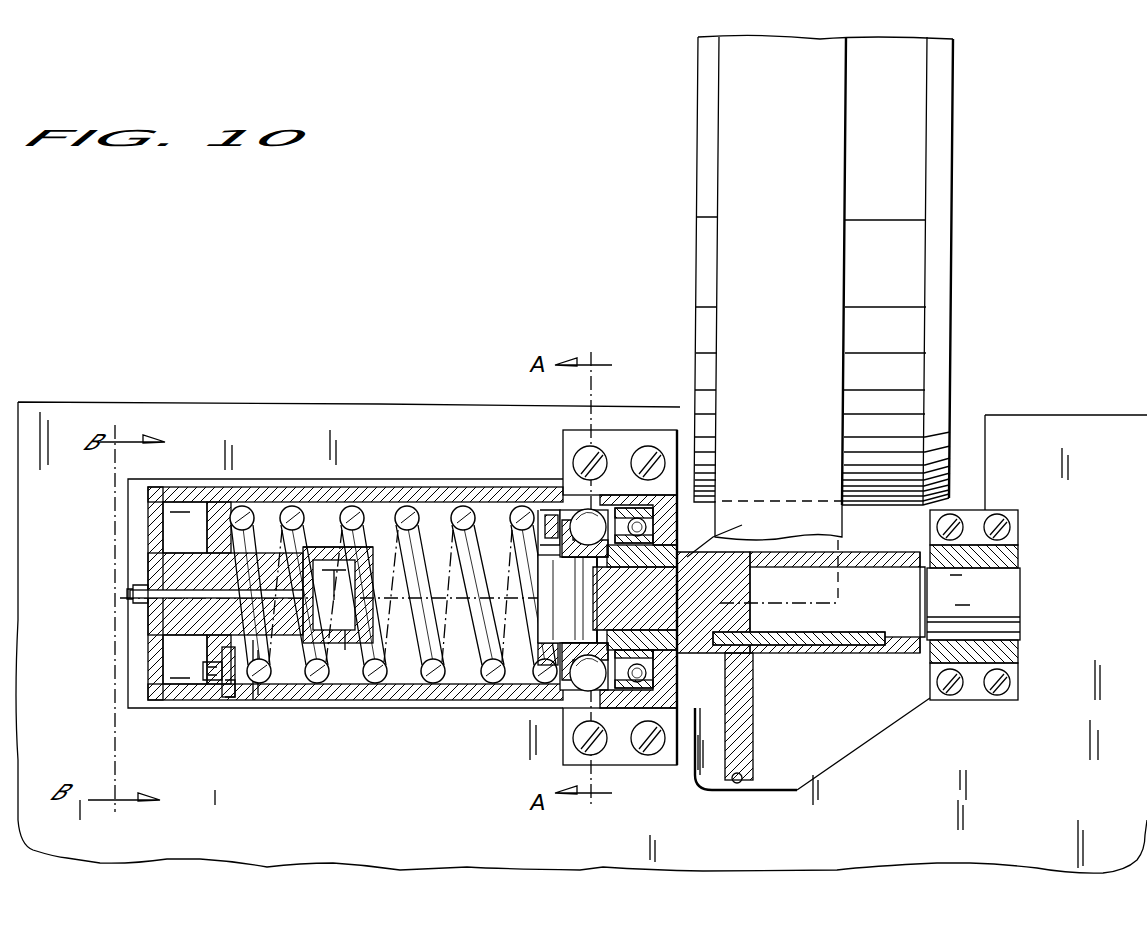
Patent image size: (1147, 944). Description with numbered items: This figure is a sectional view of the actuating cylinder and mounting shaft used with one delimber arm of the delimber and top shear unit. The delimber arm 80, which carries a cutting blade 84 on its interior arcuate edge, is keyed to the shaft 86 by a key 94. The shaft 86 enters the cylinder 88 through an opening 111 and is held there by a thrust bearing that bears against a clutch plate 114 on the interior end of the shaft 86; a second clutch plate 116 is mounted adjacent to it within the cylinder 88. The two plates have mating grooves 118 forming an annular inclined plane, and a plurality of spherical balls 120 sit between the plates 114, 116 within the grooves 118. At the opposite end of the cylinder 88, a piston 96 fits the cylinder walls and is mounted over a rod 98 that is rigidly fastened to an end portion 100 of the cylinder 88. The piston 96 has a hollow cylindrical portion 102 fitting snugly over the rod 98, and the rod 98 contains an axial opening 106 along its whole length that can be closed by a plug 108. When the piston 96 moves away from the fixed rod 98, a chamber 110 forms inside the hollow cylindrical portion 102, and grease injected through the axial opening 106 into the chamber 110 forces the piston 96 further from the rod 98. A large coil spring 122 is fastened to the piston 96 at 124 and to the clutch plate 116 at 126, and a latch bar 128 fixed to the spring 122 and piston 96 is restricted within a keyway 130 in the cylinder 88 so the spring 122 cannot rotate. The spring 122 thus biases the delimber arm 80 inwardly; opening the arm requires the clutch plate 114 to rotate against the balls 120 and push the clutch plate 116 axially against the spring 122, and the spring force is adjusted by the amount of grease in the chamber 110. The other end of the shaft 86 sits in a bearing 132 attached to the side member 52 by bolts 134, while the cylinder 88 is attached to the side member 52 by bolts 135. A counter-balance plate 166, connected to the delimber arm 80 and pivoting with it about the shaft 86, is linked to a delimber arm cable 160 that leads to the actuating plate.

The side member 52 is at (1085, 430).
The delimber arm 80 is at (748, 105).
The cutting blade 84 is at (940, 150).
The shaft 86 is at (862, 655).
The cylinder 88 is at (440, 478).
The key 94 is at (793, 652).
The piston 96 is at (329, 523).
The rod 98 is at (180, 620).
The end portion 100 is at (150, 520).
The hollow cylindrical portion 102 is at (275, 703).
The axial opening 106 is at (180, 590).
The plug 108 is at (127, 592).
The chamber 110 is at (352, 690).
The opening 111 is at (764, 550).
The clutch plate 114 is at (613, 688).
The second clutch plate 116 is at (550, 690).
The mating grooves 118 is at (588, 548).
The spherical balls 120 is at (593, 695).
The coil spring 122 is at (365, 545).
The spring fastening to piston 124 is at (215, 668).
The spring fastening to clutch plate 126 is at (560, 505).
The latch bar 128 is at (233, 700).
The keyway 130 is at (270, 690).
The bearing 132 is at (1007, 560).
The bolts 134 is at (993, 515).
The bolts 135 is at (650, 438).
The delimber arm cable 160 is at (737, 785).
The counter-balance plate 166 is at (740, 748).